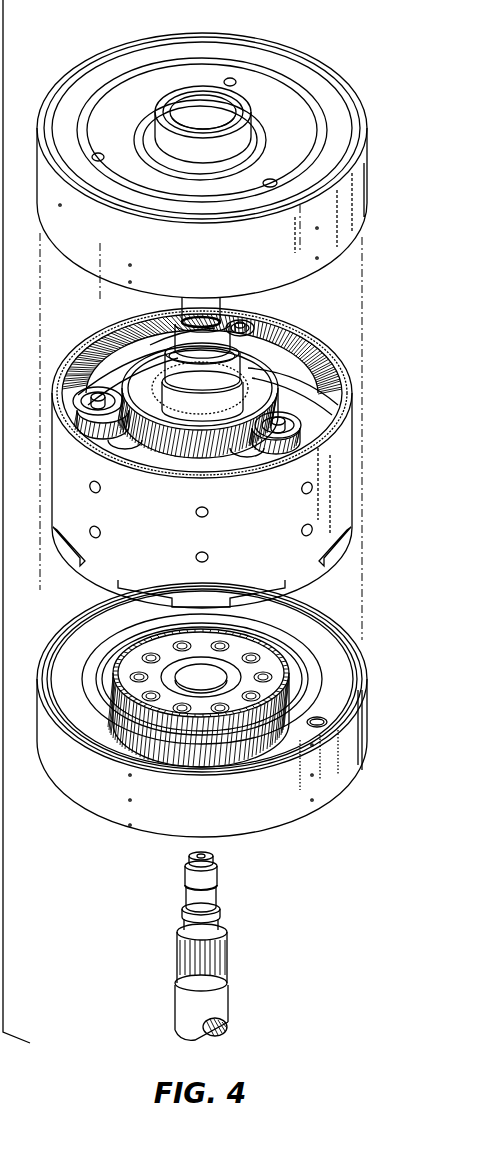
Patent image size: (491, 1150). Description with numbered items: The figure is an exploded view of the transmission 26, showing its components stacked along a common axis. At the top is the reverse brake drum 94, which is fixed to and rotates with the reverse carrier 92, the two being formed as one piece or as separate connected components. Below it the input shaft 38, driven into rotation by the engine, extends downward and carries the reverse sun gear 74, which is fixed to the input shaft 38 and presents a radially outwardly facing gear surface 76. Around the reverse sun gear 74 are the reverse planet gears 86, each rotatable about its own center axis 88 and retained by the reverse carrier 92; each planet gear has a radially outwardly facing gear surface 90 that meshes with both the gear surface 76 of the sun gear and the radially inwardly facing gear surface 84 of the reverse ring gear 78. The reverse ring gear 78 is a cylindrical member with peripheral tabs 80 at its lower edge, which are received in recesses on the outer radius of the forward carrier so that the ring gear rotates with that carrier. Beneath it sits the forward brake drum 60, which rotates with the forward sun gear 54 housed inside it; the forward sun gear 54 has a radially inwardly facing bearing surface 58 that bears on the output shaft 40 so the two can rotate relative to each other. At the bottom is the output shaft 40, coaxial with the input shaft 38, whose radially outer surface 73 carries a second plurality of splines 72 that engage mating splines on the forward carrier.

The transmission 26 is at (366, 71).
The reverse brake drum 94 is at (366, 186).
The reverse carrier 92 is at (252, 127).
The input shaft 38 is at (210, 300).
The reverse sun gear 74 is at (313, 368).
The radially inwardly facing gear surface 84 is at (290, 376).
The radially outwardly facing gear surface 76 is at (278, 386).
The reverse planet gears 86 is at (270, 313).
The center axis 88 is at (240, 318).
The radially outwardly facing gear surface 90 is at (293, 340).
The reverse ring gear 78 is at (350, 463).
The peripheral tabs 80 is at (317, 570).
The forward brake drum 60 is at (358, 760).
The forward sun gear 54 is at (293, 703).
The radially inwardly facing bearing surface 58 is at (210, 680).
The output shaft 40 is at (199, 946).
The second plurality of splines 72 is at (227, 946).
The radially outer surface 73 is at (228, 979).